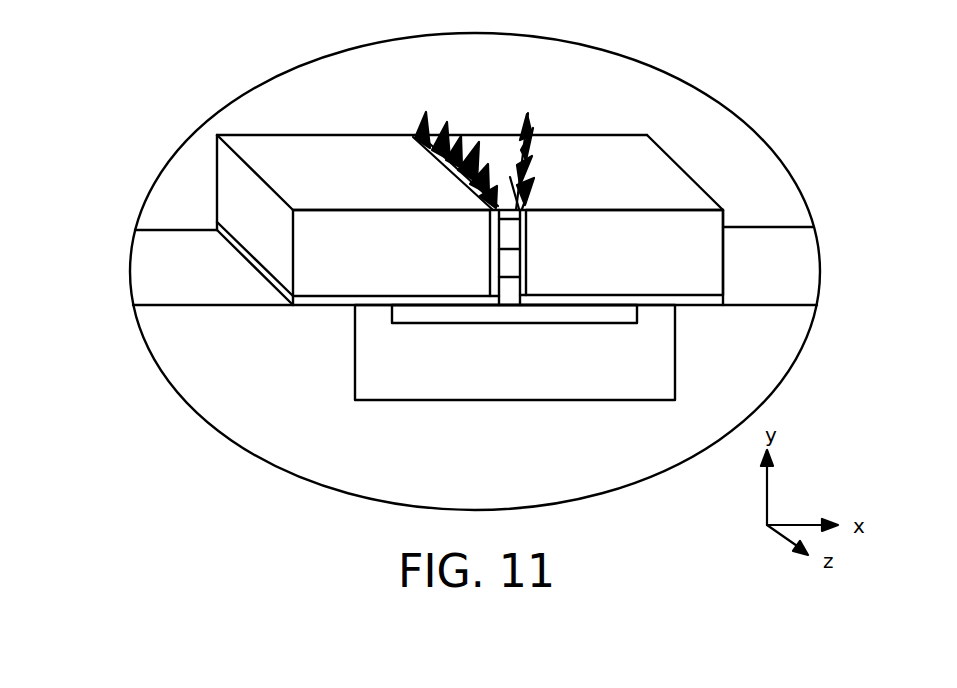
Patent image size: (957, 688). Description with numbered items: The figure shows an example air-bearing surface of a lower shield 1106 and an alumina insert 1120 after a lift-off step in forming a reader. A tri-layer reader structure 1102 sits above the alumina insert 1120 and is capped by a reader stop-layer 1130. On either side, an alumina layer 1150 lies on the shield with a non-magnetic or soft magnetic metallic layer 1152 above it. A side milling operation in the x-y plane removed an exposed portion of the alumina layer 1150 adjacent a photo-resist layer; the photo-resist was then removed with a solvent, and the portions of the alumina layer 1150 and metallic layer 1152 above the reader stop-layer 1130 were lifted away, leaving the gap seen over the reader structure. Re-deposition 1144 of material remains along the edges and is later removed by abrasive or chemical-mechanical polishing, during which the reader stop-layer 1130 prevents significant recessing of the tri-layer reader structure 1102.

The tri-layer reader structure 1102 is at (470, 243).
The lower shield 1106 is at (540, 372).
The alumina insert 1120 is at (537, 323).
The reader stop-layer 1130 is at (496, 212).
The re-deposition 1144 is at (522, 128).
The alumina layer 1150 is at (272, 288).
The metallic layer 1152 is at (425, 268).